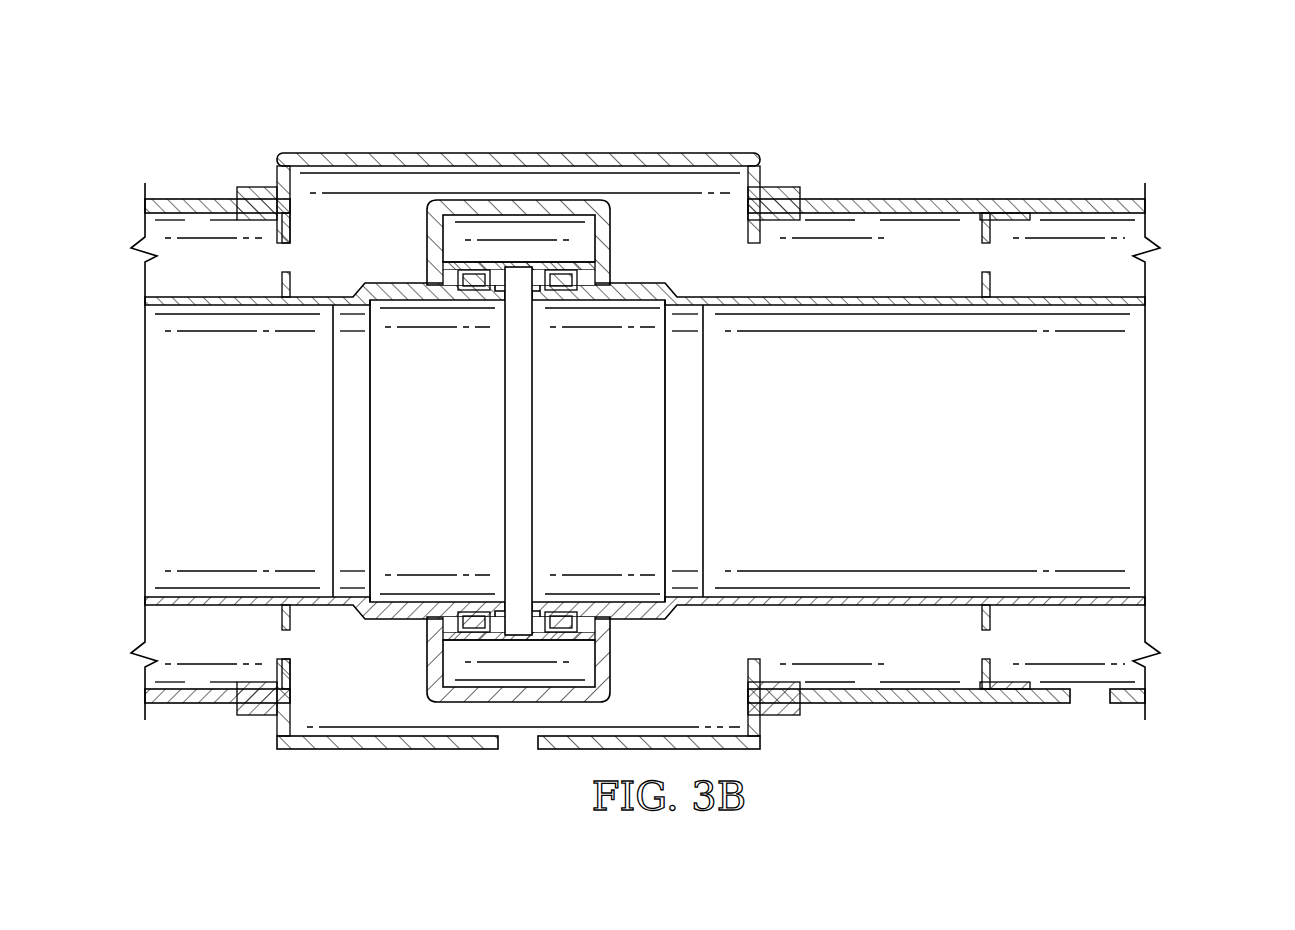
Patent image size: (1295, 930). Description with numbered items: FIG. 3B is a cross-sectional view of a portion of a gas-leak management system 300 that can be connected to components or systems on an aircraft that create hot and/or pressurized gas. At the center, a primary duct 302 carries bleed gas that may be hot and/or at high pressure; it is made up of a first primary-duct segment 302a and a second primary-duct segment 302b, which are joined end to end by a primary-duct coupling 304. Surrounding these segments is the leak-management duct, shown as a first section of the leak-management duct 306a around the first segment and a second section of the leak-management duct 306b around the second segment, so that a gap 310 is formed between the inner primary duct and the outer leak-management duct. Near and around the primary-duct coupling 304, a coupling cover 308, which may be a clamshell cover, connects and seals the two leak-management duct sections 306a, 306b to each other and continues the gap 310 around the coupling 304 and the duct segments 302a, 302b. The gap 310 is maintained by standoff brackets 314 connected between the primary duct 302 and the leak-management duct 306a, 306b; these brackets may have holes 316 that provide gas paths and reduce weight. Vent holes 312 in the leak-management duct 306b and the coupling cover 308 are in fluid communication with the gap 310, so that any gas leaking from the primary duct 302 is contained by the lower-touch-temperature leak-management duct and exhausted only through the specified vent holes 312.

The gas-leak management system 300 is at (292, 98).
The primary duct 302 is at (1199, 334).
The first primary-duct segment 302a is at (210, 471).
The second primary-duct segment 302b is at (896, 471).
The primary-duct coupling 304 is at (566, 200).
The first section of the leak-management duct 306a is at (203, 199).
The second section of the leak-management duct 306b is at (914, 199).
The coupling cover 308 is at (410, 153).
The gap 310 is at (648, 250).
The vent hole 312 is at (517, 745).
The standoff bracket 314 is at (281, 278).
The hole 316 is at (291, 257).